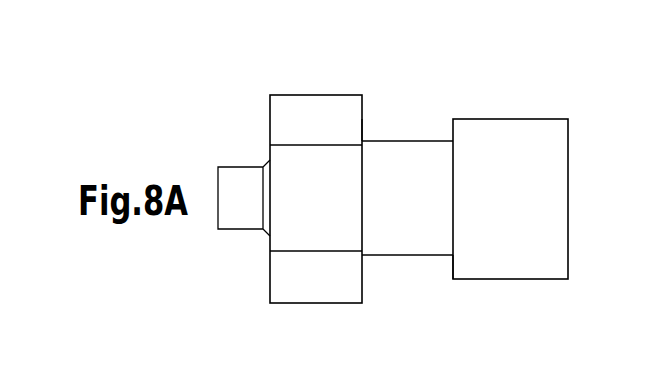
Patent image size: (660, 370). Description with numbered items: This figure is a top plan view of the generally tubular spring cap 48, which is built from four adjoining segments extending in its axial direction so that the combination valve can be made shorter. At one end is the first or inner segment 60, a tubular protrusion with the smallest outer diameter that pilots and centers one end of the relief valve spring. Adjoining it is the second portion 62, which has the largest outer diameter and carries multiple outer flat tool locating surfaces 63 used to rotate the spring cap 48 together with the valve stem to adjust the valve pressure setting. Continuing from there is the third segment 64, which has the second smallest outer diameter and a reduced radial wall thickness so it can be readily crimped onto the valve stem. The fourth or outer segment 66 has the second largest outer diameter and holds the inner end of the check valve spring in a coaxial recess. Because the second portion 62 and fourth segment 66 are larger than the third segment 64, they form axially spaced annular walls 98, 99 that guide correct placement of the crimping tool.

The spring cap 48 is at (447, 90).
The first or inner segment 60 is at (235, 213).
The second portion 62 is at (298, 93).
The tool locating surfaces 63 is at (315, 285).
The third segment 64 is at (394, 256).
The fourth or outer segment 66 is at (512, 119).
The annular wall 98 is at (363, 118).
The annular wall 99 is at (452, 271).